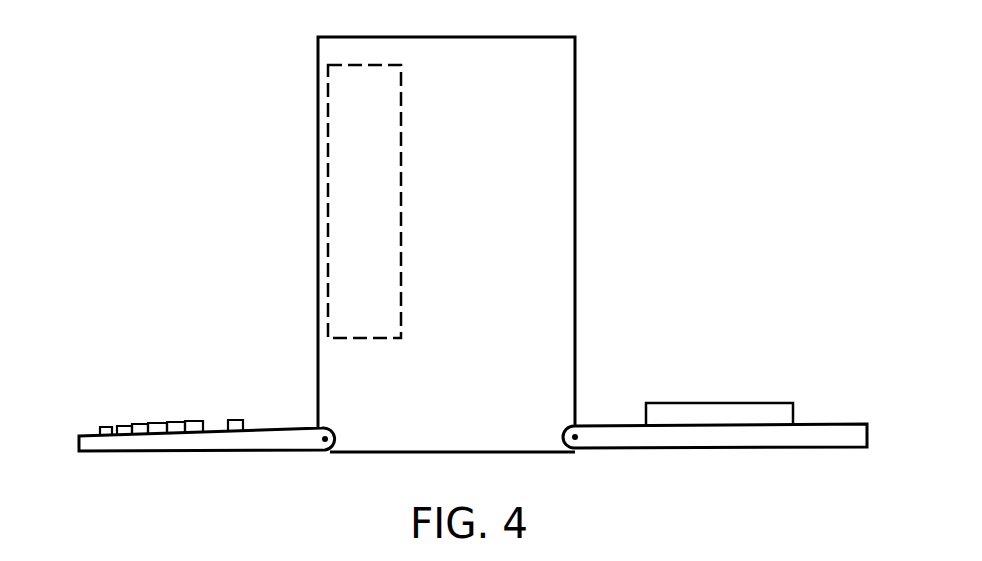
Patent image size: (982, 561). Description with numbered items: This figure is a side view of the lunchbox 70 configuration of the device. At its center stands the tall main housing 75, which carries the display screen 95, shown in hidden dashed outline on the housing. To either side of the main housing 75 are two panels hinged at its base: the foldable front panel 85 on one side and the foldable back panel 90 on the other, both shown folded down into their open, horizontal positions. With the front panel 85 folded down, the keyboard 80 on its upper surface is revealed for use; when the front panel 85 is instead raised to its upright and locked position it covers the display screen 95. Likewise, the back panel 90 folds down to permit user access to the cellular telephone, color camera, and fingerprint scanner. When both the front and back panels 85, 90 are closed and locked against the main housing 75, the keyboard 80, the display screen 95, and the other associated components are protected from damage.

The lunchbox configuration 70 is at (300, 100).
The main housing 75 is at (575, 83).
The keyboard 80 is at (148, 422).
The foldable front panel 85 is at (185, 442).
The foldable back panel 90 is at (745, 448).
The display screen 95 is at (348, 219).